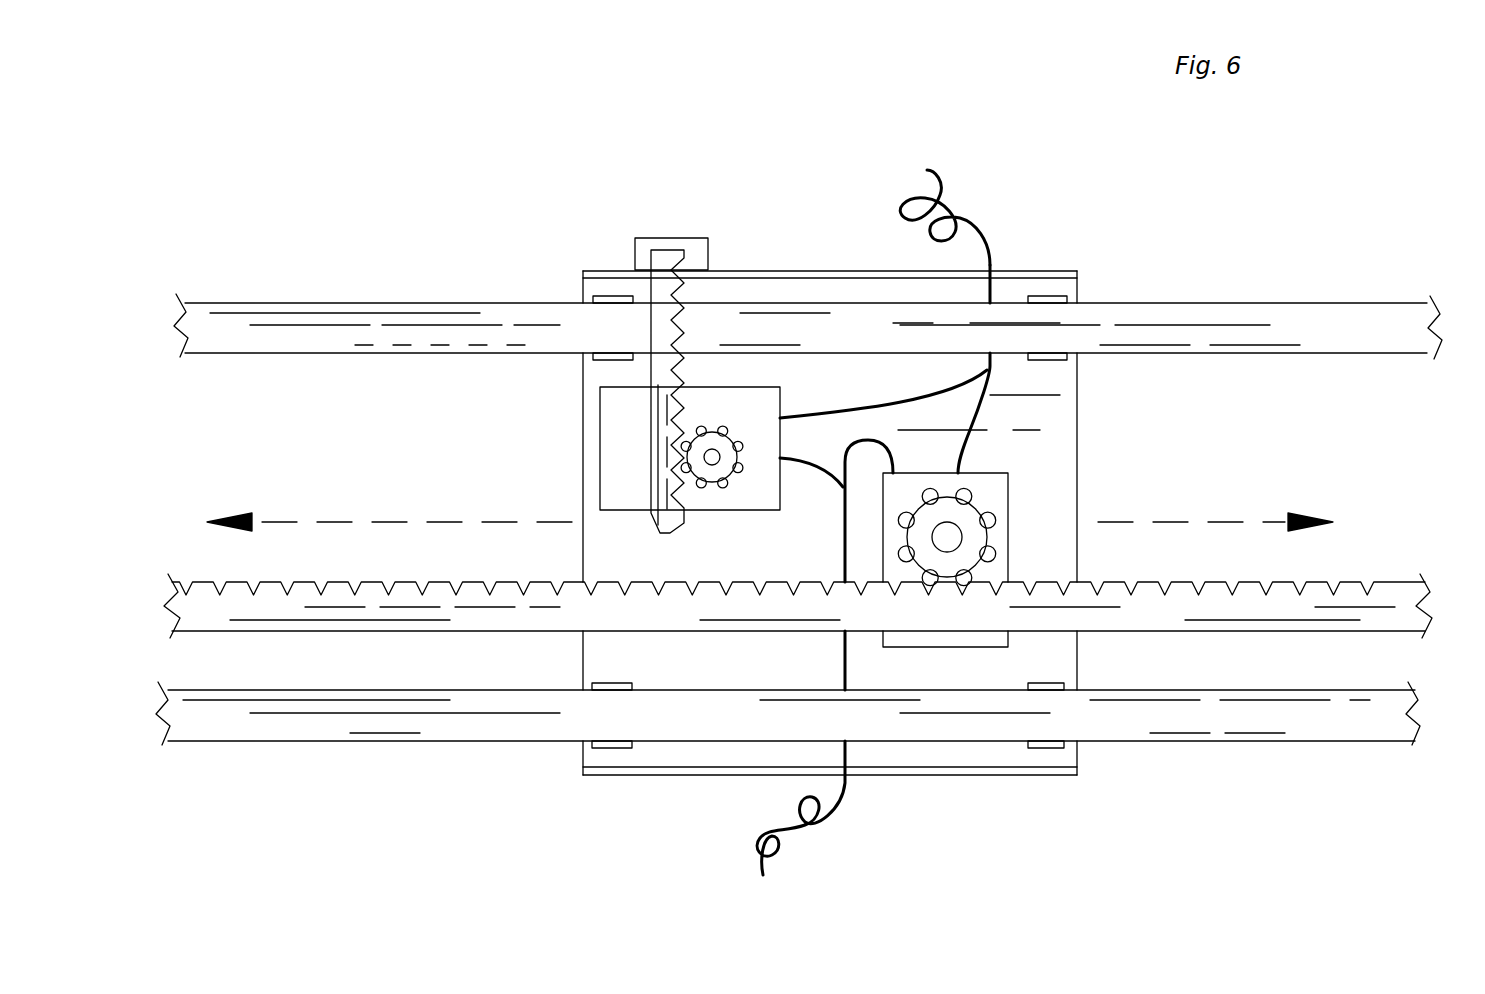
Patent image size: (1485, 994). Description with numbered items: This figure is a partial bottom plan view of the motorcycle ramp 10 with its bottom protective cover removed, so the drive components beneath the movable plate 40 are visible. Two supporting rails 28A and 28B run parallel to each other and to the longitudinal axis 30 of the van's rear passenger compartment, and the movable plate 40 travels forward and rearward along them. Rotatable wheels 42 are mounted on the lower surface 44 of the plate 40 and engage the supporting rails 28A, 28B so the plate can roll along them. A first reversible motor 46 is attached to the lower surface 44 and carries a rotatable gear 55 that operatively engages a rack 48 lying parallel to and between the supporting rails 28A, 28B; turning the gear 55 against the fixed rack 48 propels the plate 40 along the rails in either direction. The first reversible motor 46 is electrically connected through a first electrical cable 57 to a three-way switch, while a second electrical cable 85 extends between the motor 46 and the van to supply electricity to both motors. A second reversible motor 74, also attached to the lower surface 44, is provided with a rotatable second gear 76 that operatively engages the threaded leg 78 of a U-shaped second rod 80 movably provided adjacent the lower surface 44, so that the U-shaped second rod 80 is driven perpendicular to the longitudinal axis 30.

The motorcycle ramp 10 is at (1300, 148).
The supporting rail 28A is at (285, 735).
The supporting rail 28B is at (283, 323).
The longitudinal axis 30 is at (298, 520).
The movable plate 40 is at (1077, 562).
The rotatable wheels 42 is at (612, 296).
The lower surface 44 is at (800, 556).
The first reversible motor 46 is at (1010, 477).
The rack 48 is at (1382, 592).
The rotatable gear 55 is at (967, 543).
The first electrical cable 57 is at (980, 235).
The second reversible motor 74 is at (608, 477).
The rotatable second gear 76 is at (700, 458).
The threaded leg 78 is at (683, 318).
The U-shaped second rod 80 is at (665, 267).
The second electrical cable 85 is at (800, 840).